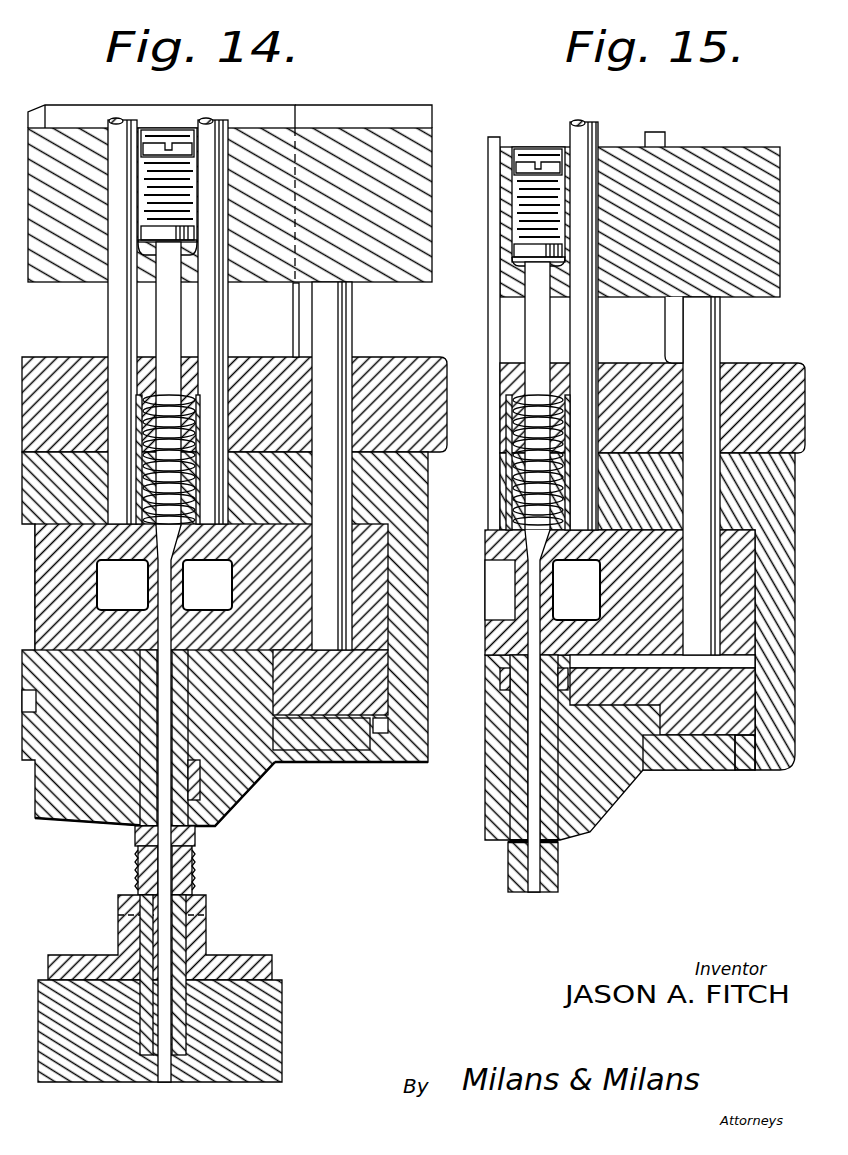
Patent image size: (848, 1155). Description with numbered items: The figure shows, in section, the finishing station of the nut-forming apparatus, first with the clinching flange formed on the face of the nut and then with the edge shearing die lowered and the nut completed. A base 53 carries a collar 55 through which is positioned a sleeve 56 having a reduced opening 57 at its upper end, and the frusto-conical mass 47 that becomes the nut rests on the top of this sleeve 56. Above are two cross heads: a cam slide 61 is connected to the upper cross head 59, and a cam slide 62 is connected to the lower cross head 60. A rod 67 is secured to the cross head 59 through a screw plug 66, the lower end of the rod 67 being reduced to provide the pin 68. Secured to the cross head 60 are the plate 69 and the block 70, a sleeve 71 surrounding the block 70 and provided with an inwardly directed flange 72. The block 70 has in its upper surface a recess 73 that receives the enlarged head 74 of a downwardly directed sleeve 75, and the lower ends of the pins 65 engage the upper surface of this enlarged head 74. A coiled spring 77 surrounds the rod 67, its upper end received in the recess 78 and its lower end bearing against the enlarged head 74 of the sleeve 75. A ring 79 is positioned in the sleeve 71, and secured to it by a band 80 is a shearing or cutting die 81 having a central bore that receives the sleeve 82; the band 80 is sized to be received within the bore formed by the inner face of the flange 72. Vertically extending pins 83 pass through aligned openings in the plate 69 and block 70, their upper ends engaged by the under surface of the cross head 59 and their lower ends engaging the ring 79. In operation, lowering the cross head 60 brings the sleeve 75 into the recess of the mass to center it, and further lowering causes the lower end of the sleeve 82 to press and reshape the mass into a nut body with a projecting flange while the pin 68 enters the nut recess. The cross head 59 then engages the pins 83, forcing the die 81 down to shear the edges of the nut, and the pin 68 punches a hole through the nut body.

In FIG. 14, the frusto-conical mass 47 is at (196, 836).
In FIG. 15, the frusto-conical mass 47 is at (512, 842).
In FIG. 14, the base 53 is at (282, 996).
In FIG. 14, the collar 55 is at (206, 936).
In FIG. 14, the sleeve 56 is at (194, 898).
In FIG. 14, the reduced opening 57 is at (194, 870).
In FIG. 15, the reduced opening 57 is at (545, 874).
In FIG. 14, the cross head 59 is at (430, 220).
In FIG. 15, the cross head 59 is at (634, 346).
In FIG. 14, the cross head 60 is at (392, 354).
In FIG. 15, the cross head 60 is at (770, 356).
In FIG. 14, the cam slide 61 is at (353, 126).
In FIG. 14, the cam slide 62 is at (272, 120).
In FIG. 14, the pins 65 is at (212, 130).
In FIG. 15, the pins 65 is at (592, 128).
In FIG. 14, the screw plug 66 is at (150, 244).
In FIG. 15, the screw plug 66 is at (522, 258).
In FIG. 14, the rod 67 is at (180, 322).
In FIG. 15, the rod 67 is at (528, 323).
In FIG. 14, the pin 68 is at (160, 776).
In FIG. 15, the pin 68 is at (535, 786).
In FIG. 14, the plate 69 is at (426, 508).
In FIG. 15, the plate 69 is at (640, 646).
In FIG. 14, the block 70 is at (385, 630).
In FIG. 15, the block 70 is at (620, 592).
In FIG. 14, the sleeve 71 is at (395, 685).
In FIG. 15, the sleeve 71 is at (788, 726).
In FIG. 14, the inwardly directed flange 72 is at (360, 764).
In FIG. 14, the recess 73 is at (207, 585).
In FIG. 15, the recess 73 is at (576, 590).
In FIG. 14, the enlarged head 74 is at (122, 564).
In FIG. 15, the enlarged head 74 is at (578, 603).
In FIG. 14, the downwardly directed sleeve 75 is at (186, 800).
In FIG. 15, the downwardly directed sleeve 75 is at (508, 818).
In FIG. 14, the coiled spring 77 is at (146, 402).
In FIG. 15, the coiled spring 77 is at (520, 410).
In FIG. 14, the recess 78 is at (200, 398).
In FIG. 15, the recess 78 is at (571, 398).
In FIG. 14, the ring 79 is at (390, 722).
In FIG. 15, the ring 79 is at (742, 740).
In FIG. 14, the band 80 is at (330, 752).
In FIG. 15, the band 80 is at (693, 770).
In FIG. 14, the shearing die 81 is at (96, 772).
In FIG. 14, the sleeve 82 is at (200, 812).
In FIG. 15, the sleeve 82 is at (512, 772).
In FIG. 14, the pins 83 is at (345, 326).
In FIG. 15, the pins 83 is at (722, 342).